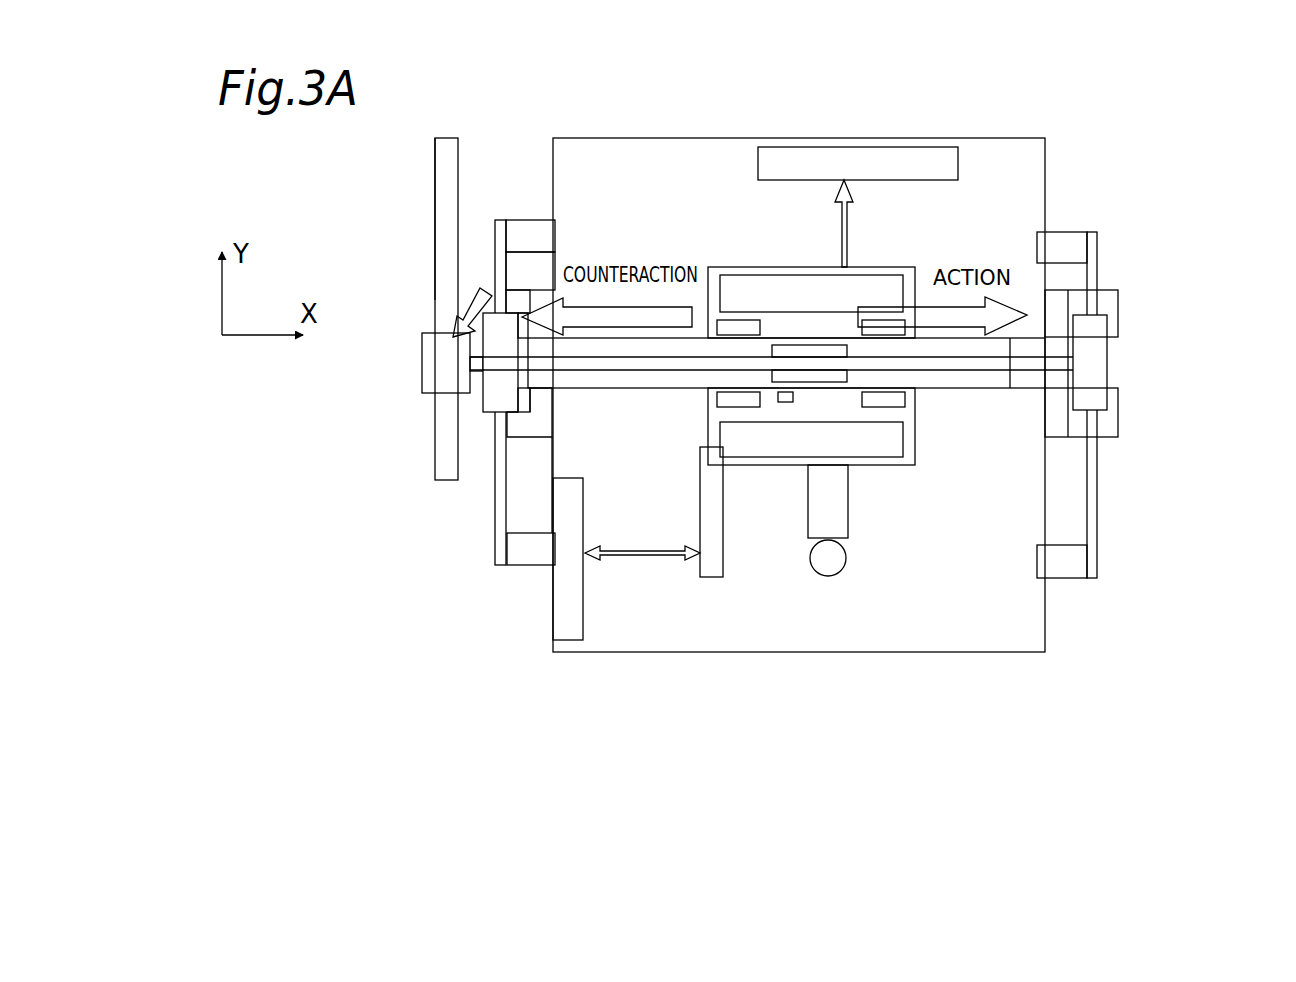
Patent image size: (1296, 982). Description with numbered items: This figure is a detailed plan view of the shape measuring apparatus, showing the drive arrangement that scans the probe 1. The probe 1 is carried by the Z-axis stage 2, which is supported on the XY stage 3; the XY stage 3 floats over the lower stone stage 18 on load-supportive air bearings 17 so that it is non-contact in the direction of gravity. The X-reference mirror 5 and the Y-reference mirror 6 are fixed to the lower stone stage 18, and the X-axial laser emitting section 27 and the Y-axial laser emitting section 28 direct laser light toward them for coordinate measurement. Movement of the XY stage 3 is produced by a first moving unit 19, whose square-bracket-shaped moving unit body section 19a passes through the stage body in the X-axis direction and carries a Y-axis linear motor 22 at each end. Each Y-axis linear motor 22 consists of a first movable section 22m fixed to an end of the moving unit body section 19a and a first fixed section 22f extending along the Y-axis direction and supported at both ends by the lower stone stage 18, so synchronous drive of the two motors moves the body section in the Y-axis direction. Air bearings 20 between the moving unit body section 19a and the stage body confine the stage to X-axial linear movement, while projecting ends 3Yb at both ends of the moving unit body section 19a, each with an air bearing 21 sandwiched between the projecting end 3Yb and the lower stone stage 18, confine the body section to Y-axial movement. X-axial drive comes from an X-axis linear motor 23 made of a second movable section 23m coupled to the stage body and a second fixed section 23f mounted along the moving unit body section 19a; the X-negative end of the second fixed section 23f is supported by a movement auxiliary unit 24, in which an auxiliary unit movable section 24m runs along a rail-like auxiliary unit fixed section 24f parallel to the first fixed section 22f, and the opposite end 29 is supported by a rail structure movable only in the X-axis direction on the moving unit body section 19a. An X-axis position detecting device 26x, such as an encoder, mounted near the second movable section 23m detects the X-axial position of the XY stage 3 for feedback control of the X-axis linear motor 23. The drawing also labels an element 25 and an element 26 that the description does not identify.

The probe 1 is at (828, 576).
The Z1-axis stage 2 is at (843, 497).
The XY stage 3 is at (890, 443).
The projecting end 3Yb is at (907, 418).
The X-reference mirror 5 is at (577, 612).
The Y-reference mirror 6 is at (907, 165).
The load-supportive air bearing 17 is at (878, 295).
The lower stone stage 18 is at (992, 623).
The first moving unit 19 is at (1112, 328).
The moving unit body section 19a is at (575, 384).
The air bearing 20 is at (742, 327).
The air bearing 21 is at (537, 295).
The Y-axis linear motor 22 is at (503, 212).
The first fixed section 22f is at (530, 218).
The first movable section 22m is at (490, 400).
The X-axis linear motor 23 is at (516, 566).
The second fixed section 23f is at (662, 367).
The second movable section 23m is at (800, 384).
The movement auxiliary unit 24 is at (443, 402).
The auxiliary unit fixed section 24f is at (445, 223).
The auxiliary unit movable section 24m is at (433, 372).
The coupling arrow 25 is at (477, 308).
The motor coil 26 is at (790, 326).
The X-axis position detecting device 26x is at (785, 402).
The X-axial laser emitting section 27 is at (712, 577).
The Y-axial laser emitting section 28 is at (849, 245).
The end on the X-positive side 29 is at (1027, 380).